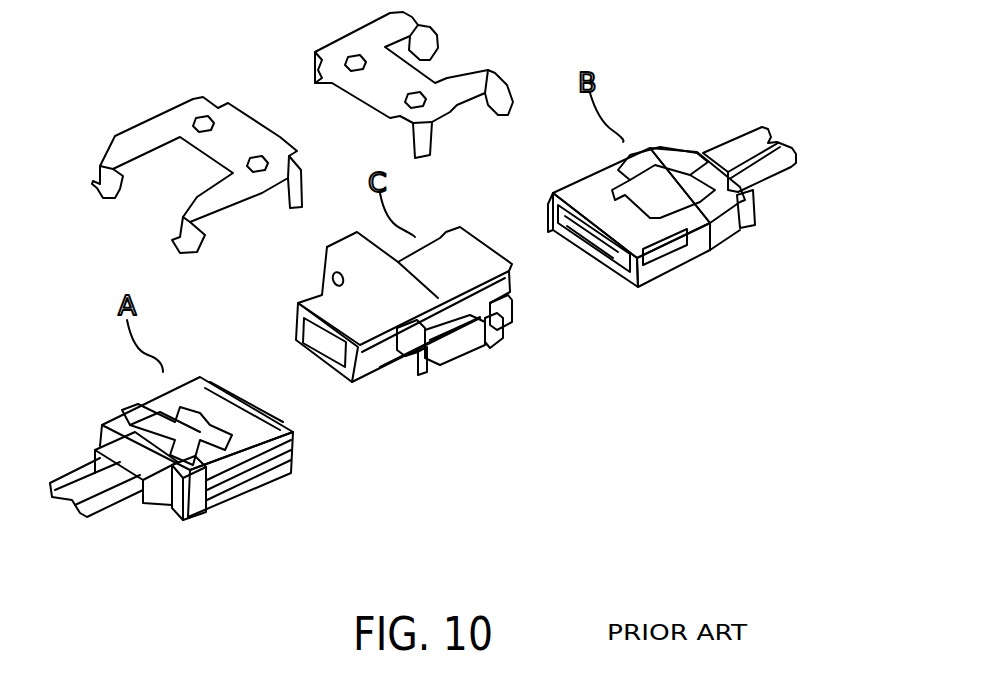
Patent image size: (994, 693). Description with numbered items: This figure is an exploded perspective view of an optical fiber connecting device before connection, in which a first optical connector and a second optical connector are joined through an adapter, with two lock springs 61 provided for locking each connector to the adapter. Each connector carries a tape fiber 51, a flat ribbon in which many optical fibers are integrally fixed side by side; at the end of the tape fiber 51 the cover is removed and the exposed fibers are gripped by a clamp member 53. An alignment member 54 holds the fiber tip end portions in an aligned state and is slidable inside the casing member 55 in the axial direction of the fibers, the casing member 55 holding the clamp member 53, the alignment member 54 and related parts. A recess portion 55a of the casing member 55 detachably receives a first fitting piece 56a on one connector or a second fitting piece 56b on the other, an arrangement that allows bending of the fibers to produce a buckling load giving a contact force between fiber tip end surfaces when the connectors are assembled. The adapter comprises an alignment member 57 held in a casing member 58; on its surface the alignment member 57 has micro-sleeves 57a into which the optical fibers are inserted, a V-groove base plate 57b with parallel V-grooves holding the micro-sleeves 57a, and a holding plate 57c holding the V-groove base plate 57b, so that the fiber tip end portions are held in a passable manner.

The tape fiber 51 is at (767, 167).
The clamp member 53 is at (728, 212).
The alignment member 54 is at (597, 257).
The casing member 55 is at (652, 235).
The recess portion 55a is at (270, 460).
The first fitting piece 56a is at (665, 192).
The second fitting piece 56b is at (198, 442).
The alignment member 57 is at (432, 378).
The micro-sleeve 57a is at (497, 342).
The V-groove base plate 57b is at (435, 333).
The holding plate 57c is at (403, 350).
The casing member 58 is at (488, 258).
The lock spring 61 is at (280, 147).